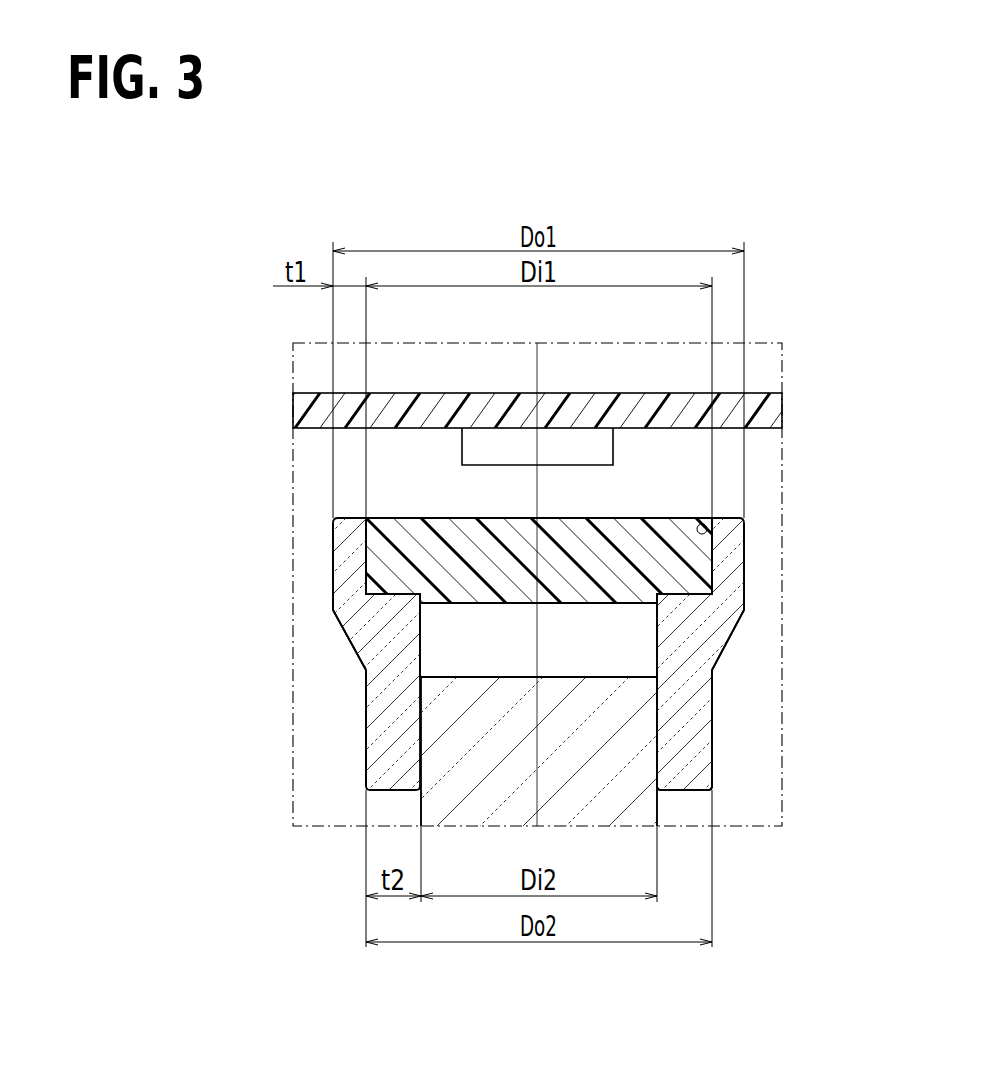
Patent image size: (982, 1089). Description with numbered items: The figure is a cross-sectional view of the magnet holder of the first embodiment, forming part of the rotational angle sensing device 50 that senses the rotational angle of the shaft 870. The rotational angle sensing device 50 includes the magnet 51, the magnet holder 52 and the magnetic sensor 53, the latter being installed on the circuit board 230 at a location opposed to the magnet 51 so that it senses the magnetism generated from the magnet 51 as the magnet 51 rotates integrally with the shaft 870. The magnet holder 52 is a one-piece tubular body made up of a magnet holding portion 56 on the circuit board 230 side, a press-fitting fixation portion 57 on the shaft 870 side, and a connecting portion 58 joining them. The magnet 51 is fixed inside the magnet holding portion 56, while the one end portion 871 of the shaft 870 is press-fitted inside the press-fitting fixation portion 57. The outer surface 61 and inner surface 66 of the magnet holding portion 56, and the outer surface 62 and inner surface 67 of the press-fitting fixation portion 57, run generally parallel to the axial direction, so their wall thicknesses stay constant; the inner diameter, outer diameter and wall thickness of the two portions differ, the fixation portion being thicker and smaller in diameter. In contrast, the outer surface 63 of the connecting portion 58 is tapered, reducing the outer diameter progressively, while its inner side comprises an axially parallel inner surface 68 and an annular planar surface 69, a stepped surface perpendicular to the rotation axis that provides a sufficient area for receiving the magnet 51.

The circuit board 230 is at (318, 413).
The rotational angle sensing device 50 is at (310, 479).
The magnet 51 is at (628, 530).
The magnet holder 52 is at (321, 530).
The magnetic sensor 53 is at (510, 443).
The magnet holding portion 56 is at (348, 560).
The press-fitting fixation portion 57 is at (378, 713).
The connecting portion 58 is at (385, 635).
The outer surface of the magnet holding portion 61 is at (745, 549).
The outer surface of the press-fitting fixation portion 62 is at (713, 727).
The outer surface of the connecting portion 63 is at (733, 640).
The inner surface of the magnet holding portion 66 is at (714, 515).
The inner surface of the press-fitting fixation portion 67 is at (640, 757).
The inner surface of the connecting portion 68 is at (637, 640).
The annular planar surface 69 is at (680, 583).
The shaft 870 is at (590, 803).
The one end portion 871 is at (598, 712).